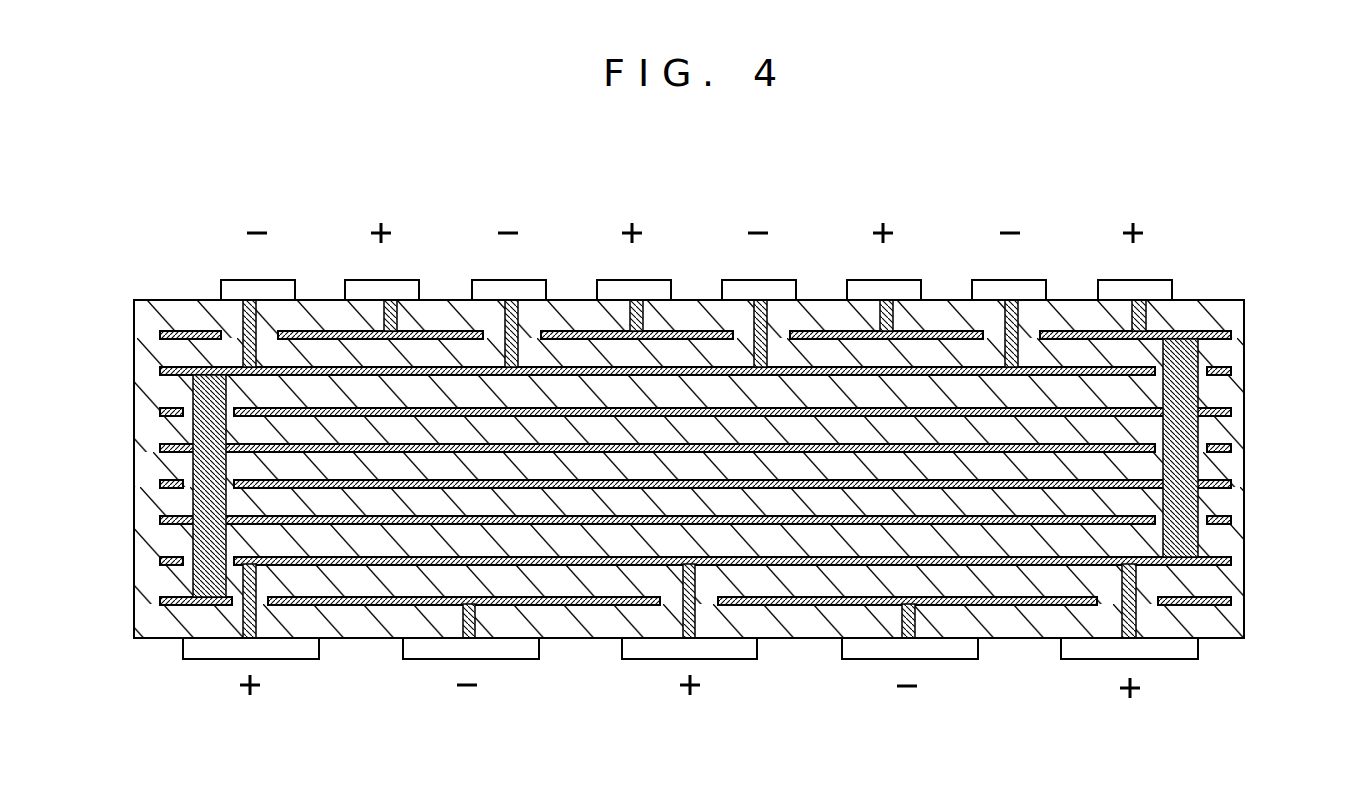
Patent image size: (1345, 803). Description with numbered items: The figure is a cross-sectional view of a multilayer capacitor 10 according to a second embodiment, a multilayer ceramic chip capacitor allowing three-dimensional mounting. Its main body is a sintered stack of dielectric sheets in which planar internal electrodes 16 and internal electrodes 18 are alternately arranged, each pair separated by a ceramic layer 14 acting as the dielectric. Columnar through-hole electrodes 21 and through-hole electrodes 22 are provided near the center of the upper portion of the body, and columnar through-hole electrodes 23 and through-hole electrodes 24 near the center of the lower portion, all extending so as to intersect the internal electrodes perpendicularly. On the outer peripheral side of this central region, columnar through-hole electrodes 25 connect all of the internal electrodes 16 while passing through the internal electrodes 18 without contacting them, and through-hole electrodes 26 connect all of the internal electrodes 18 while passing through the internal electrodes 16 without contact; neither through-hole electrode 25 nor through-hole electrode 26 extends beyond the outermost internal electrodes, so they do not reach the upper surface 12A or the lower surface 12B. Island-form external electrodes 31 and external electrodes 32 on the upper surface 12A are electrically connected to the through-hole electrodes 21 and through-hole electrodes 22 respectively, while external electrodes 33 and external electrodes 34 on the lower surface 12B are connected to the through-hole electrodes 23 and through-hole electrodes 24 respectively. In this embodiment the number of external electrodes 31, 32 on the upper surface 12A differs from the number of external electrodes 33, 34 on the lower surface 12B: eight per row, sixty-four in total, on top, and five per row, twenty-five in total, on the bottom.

The multilayer capacitor 10 is at (1243, 240).
The upper surface 12A is at (1185, 300).
The lower surface 12B is at (1012, 640).
The ceramic layer 14 is at (177, 430).
The internal electrode 16 is at (1215, 561).
The internal electrode 18 is at (1200, 600).
The through-hole electrode 21 is at (1132, 320).
The through-hole electrode 22 is at (1005, 317).
The through-hole electrode 23 is at (247, 625).
The through-hole electrode 24 is at (475, 620).
The through-hole electrode 25 is at (1185, 465).
The through-hole electrode 26 is at (208, 470).
The external electrode 31 is at (1125, 280).
The external electrode 32 is at (998, 280).
The external electrode 33 is at (283, 659).
The external electrode 34 is at (510, 659).